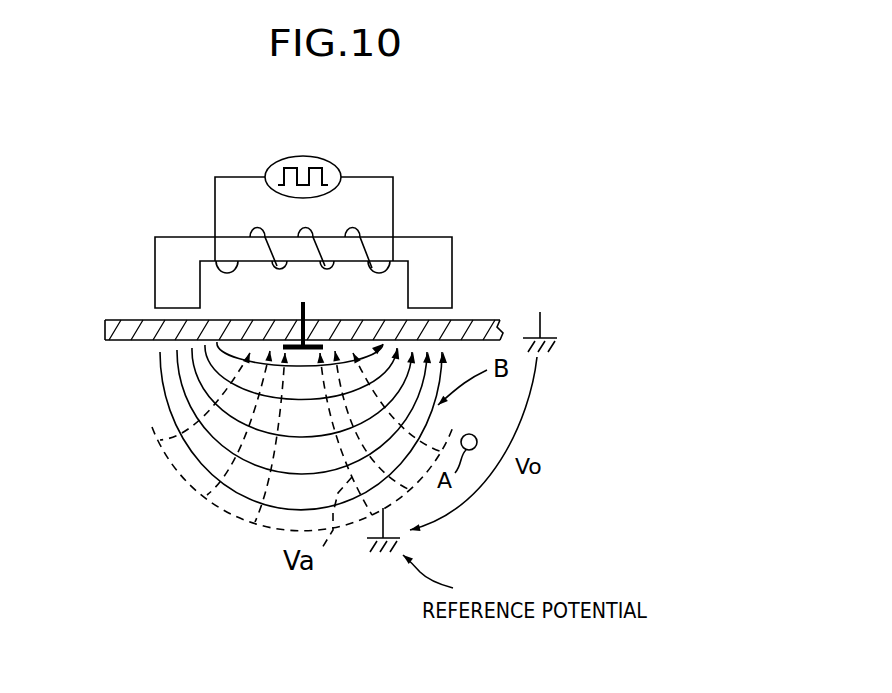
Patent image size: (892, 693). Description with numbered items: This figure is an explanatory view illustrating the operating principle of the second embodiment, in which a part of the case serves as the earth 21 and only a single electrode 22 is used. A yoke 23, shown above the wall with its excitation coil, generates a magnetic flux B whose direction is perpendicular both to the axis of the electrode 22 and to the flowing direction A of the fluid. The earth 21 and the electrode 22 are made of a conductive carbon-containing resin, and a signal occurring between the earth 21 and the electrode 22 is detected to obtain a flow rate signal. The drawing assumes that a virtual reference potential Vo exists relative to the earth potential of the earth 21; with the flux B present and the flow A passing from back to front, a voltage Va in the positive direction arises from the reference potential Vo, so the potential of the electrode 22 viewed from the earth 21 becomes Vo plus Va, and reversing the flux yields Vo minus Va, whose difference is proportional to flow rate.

The earth 21 is at (563, 350).
The electrode 22 is at (312, 313).
The yoke 23 is at (443, 253).